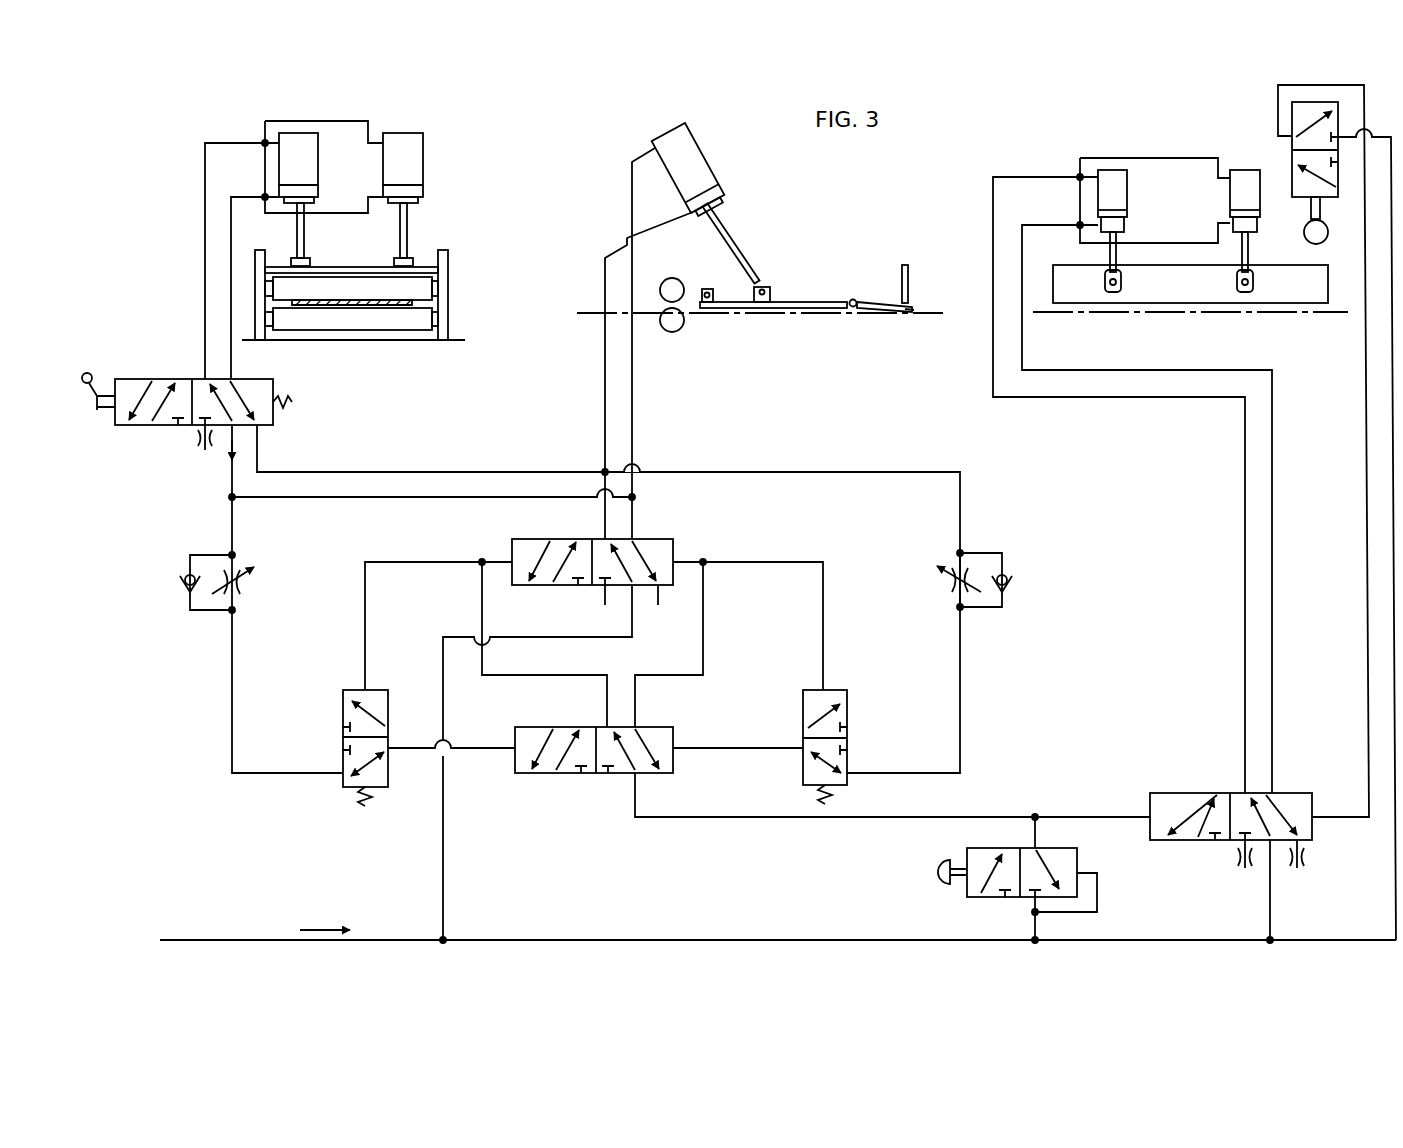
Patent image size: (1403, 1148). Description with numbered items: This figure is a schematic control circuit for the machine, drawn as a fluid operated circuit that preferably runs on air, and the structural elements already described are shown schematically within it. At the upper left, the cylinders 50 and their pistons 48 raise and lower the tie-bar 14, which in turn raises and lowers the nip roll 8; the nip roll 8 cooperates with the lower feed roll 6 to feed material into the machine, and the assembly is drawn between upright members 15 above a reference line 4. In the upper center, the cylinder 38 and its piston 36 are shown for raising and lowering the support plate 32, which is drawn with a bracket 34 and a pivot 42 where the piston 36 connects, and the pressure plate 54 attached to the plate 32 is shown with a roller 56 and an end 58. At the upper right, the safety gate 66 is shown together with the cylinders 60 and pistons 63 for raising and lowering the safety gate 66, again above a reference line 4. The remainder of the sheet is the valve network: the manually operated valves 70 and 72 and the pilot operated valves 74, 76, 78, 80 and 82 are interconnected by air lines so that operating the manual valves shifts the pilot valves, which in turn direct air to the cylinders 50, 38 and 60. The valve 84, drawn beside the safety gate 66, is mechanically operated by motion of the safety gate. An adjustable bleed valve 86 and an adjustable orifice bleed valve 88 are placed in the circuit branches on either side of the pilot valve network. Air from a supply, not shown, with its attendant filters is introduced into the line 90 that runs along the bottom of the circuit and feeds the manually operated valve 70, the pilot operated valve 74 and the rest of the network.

The work surface centerline 4 is at (590, 313).
The lower feed roll 6 is at (359, 328).
The nip roll 8 is at (359, 298).
The tie-bar 14 is at (336, 267).
The guide posts 15 is at (262, 250).
The support plate 32 is at (820, 302).
The bracket 34 is at (709, 290).
The piston 36 is at (726, 222).
The cylinder 38 is at (711, 163).
The pivot bracket 42 is at (765, 288).
The pistons 48 is at (305, 224).
The cylinders 50 is at (320, 170).
The pressure plate 54 is at (884, 303).
The roller 56 is at (851, 301).
The arm tip 58 is at (913, 309).
The cylinders 60 is at (1130, 185).
The pistons 63 is at (1118, 255).
The safety gate 66 is at (910, 275).
The manually operated valve 70 is at (990, 898).
The manually operated valve 72 is at (150, 426).
The pilot operated valve 74 is at (1168, 793).
The pilot operated valve 76 is at (567, 774).
The pilot operated valve 78 is at (532, 539).
The pilot operated valve 80 is at (849, 718).
The pilot operated valve 82 is at (343, 712).
The valve 84 is at (1290, 147).
The adjustable bleed valve 86 is at (247, 584).
The adjustable orifice bleed valve 88 is at (945, 581).
The line 90 is at (415, 940).